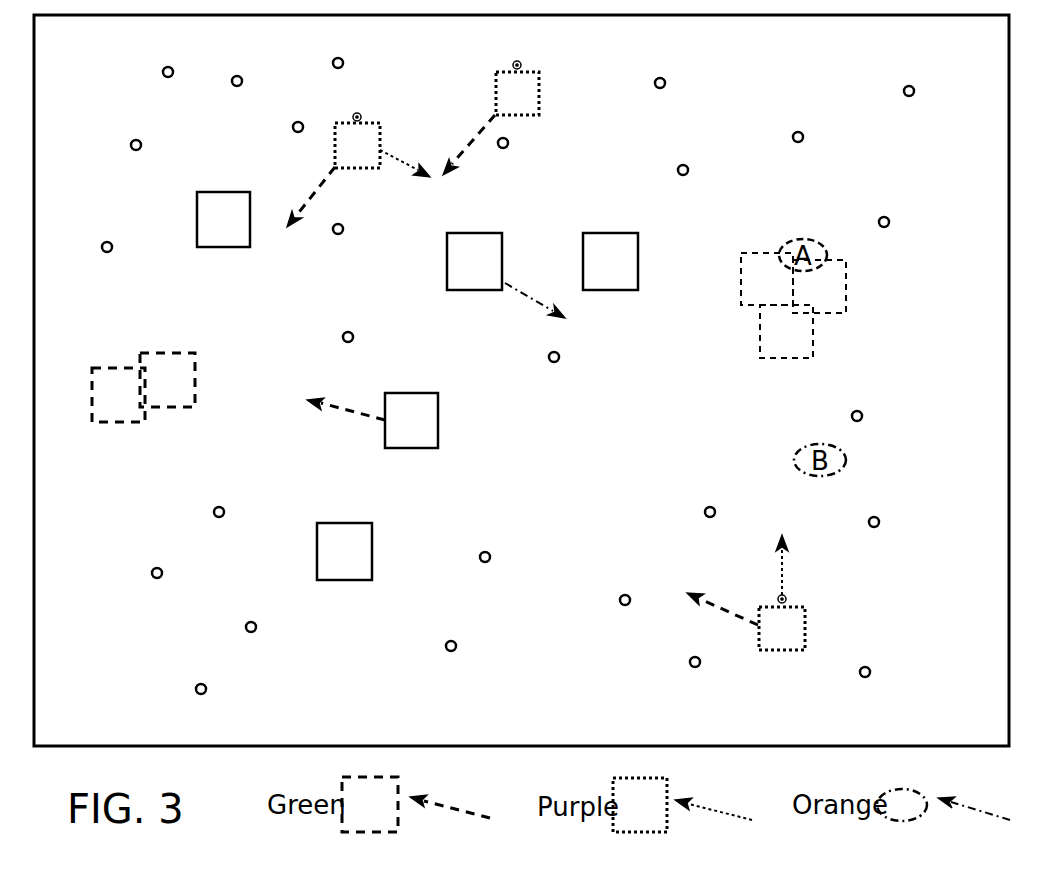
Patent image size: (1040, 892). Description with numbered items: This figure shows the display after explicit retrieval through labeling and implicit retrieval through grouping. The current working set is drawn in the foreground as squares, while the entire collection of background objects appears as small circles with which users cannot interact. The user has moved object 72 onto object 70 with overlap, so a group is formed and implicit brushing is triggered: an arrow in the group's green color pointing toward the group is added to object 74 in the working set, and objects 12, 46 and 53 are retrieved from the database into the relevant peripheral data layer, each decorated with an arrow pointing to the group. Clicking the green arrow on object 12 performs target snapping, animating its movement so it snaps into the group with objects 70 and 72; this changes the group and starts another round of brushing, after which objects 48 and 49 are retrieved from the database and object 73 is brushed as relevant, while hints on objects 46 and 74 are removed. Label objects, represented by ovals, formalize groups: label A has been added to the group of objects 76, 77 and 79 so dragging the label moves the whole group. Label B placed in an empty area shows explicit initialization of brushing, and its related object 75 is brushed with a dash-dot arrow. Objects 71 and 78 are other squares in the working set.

The object 12 is at (746, 592).
The object 46 is at (491, 118).
The object 48 is at (172, 88).
The object 49 is at (244, 96).
The object 53 is at (358, 170).
The object 70 is at (118, 395).
The object 71 is at (223, 219).
The object 72 is at (167, 380).
The object 73 is at (344, 551).
The object 74 is at (372, 420).
The object 75 is at (506, 275).
The object 76 is at (819, 286).
The object 77 is at (786, 331).
The object 78 is at (610, 261).
The object 79 is at (767, 279).